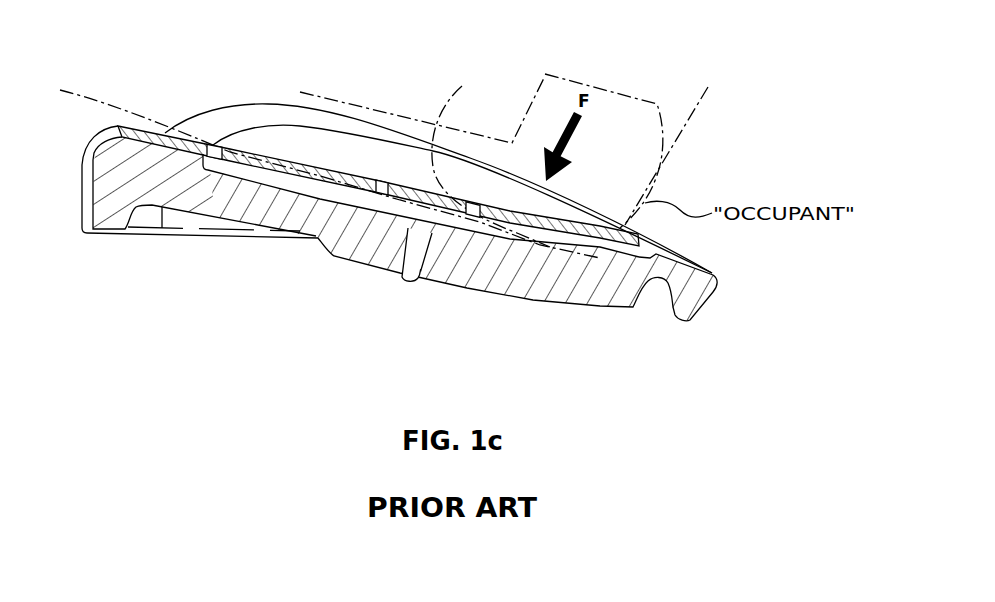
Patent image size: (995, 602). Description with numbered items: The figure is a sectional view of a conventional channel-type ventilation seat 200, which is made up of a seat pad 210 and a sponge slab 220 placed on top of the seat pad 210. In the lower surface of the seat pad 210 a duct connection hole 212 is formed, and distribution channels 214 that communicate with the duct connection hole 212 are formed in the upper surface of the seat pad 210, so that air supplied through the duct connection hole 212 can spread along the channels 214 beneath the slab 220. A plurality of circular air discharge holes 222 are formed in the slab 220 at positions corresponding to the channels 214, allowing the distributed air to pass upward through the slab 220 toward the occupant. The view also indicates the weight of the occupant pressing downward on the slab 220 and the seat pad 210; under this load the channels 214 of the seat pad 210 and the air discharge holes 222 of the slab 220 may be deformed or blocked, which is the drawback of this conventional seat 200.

The channel-type ventilation seat 200 is at (176, 251).
The seat pad 210 is at (362, 271).
The duct connection hole 212 is at (419, 266).
The distribution channels 214 is at (292, 182).
The sponge slab 220 is at (276, 138).
The air discharge holes 222 is at (308, 166).